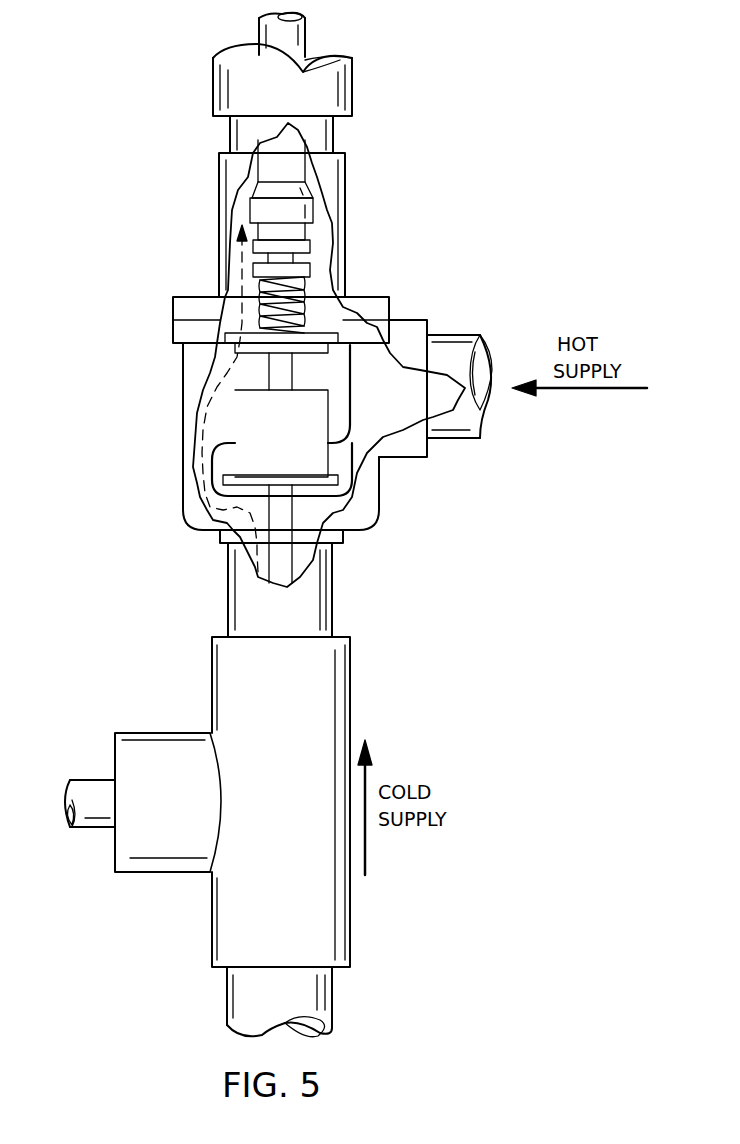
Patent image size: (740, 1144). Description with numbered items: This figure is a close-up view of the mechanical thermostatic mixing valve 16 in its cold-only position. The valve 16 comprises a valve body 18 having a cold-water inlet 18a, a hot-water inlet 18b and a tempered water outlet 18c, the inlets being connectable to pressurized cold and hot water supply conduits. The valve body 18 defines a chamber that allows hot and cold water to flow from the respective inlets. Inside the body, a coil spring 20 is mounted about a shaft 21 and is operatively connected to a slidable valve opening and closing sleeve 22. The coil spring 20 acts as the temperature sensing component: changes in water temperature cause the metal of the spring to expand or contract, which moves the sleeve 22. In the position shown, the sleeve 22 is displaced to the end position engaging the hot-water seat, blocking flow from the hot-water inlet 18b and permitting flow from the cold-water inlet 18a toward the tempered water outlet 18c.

The thermostatic mixing valve 16 is at (432, 477).
The valve body 18 is at (348, 178).
The cold-water inlet 18a is at (335, 588).
The hot-water inlet 18b is at (185, 488).
The tempered water outlet 18c is at (352, 87).
The coil spring 20 is at (303, 290).
The shaft 21 is at (266, 366).
The valve opening and closing sleeve 22 is at (330, 407).